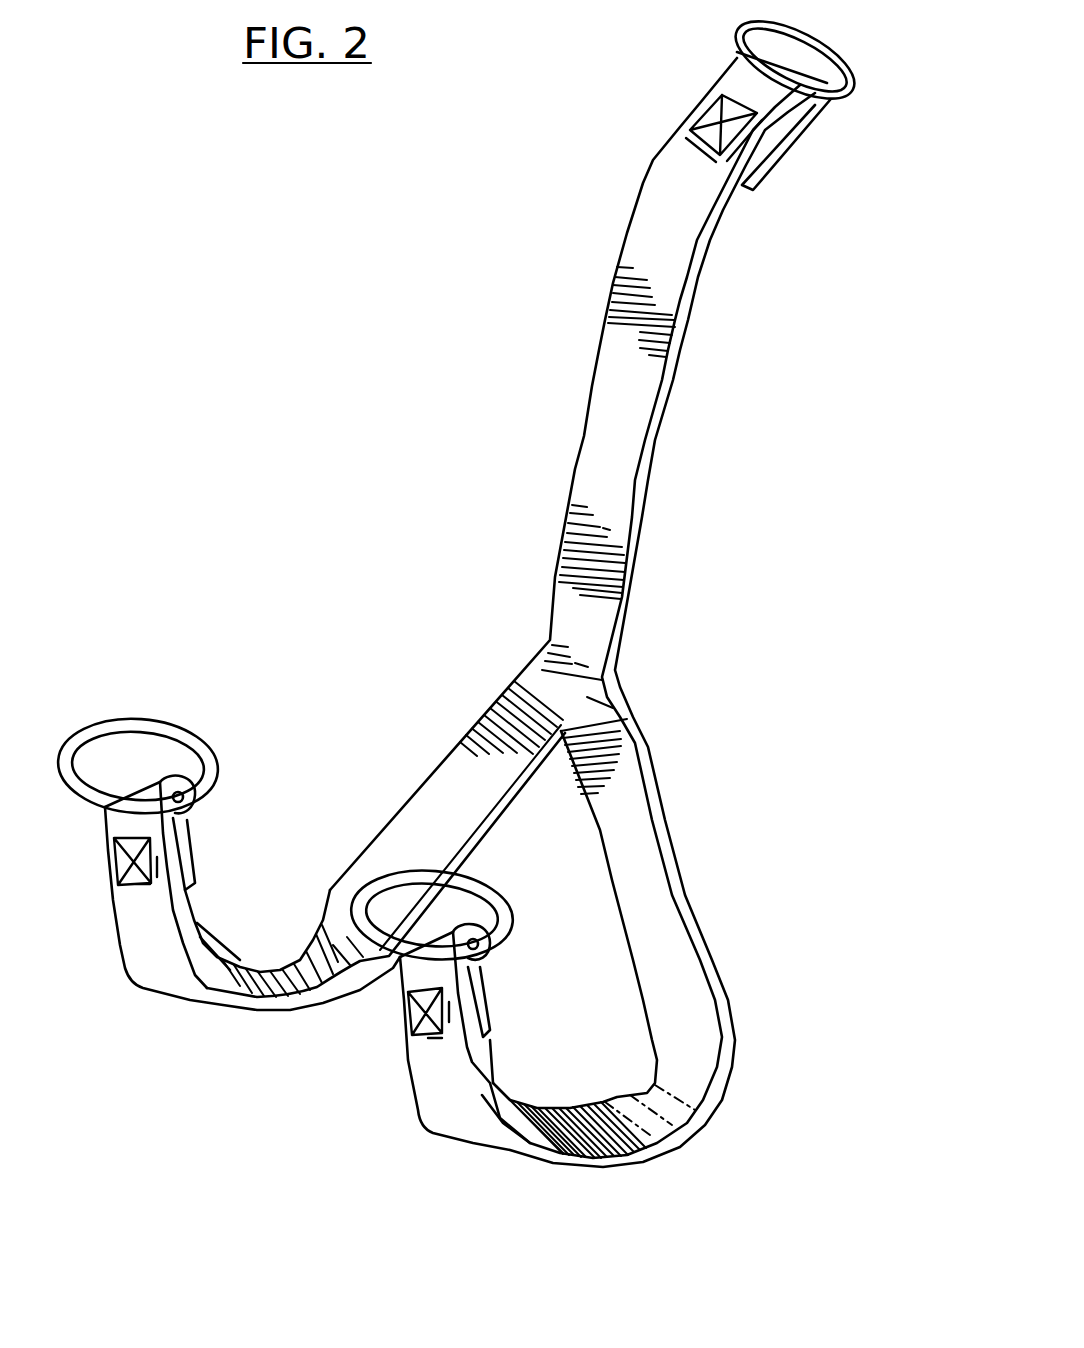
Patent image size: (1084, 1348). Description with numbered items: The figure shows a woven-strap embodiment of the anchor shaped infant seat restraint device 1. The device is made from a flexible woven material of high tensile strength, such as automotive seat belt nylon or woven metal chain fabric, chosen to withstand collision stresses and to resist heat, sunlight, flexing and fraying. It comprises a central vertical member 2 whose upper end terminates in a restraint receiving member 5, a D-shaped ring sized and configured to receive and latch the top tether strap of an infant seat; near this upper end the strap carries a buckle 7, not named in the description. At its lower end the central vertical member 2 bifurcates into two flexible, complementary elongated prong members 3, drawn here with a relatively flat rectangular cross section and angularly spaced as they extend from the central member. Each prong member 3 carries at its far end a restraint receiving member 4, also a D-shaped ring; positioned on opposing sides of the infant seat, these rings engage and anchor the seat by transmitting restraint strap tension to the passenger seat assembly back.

The infant seat restraint device 1 is at (564, 421).
The central vertical member 2 is at (663, 421).
The prong members 3 is at (410, 1098).
The restraint receiving member 4 is at (160, 730).
The restraint receiving member 5 is at (853, 84).
The buckle 7 is at (697, 107).